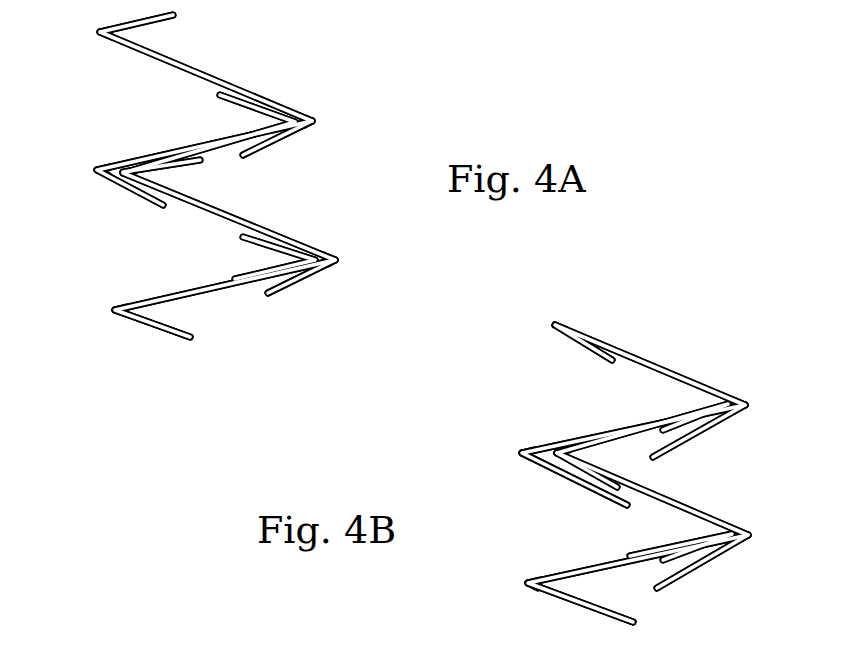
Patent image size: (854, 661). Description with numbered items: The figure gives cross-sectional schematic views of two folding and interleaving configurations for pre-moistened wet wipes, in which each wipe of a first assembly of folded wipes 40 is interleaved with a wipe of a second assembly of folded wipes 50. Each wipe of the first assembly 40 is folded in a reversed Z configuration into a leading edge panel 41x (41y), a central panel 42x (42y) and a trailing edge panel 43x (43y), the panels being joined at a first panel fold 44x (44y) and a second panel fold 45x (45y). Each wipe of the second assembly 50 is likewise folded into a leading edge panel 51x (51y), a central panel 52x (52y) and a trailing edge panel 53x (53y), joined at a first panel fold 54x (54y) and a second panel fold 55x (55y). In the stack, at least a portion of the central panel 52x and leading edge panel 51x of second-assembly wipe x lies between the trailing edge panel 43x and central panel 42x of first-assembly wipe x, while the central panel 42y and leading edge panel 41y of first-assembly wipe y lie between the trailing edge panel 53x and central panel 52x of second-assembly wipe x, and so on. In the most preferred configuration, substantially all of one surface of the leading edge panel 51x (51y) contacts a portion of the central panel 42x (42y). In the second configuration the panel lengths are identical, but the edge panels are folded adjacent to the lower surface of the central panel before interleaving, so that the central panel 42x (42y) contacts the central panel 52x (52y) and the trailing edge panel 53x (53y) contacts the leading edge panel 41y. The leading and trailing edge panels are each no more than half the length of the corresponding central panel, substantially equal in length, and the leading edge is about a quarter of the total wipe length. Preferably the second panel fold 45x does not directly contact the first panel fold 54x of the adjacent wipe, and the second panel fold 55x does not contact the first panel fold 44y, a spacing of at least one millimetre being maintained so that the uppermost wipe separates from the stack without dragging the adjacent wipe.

In FIG. 4A, the first assembly of folded wipes 40 is at (327, 285).
In FIG. 4B, the first assembly of folded wipes 40 is at (755, 548).
In FIG. 4A, the leading edge panel 41x is at (170, 17).
In FIG. 4B, the leading edge panel 41x is at (578, 338).
In FIG. 4A, the central panel 42x is at (257, 92).
In FIG. 4B, the central panel 42x is at (655, 363).
In FIG. 4A, the trailing edge panel 43x is at (290, 137).
In FIG. 4B, the trailing edge panel 43x is at (713, 430).
In FIG. 4A, the first panel fold 44x is at (98, 31).
In FIG. 4B, the first panel fold 44x is at (552, 323).
In FIG. 4A, the second panel fold 45x is at (316, 121).
In FIG. 4B, the second panel fold 45x is at (748, 408).
In FIG. 4A, the second assembly of folded wipes 50 is at (121, 322).
In FIG. 4B, the second assembly of folded wipes 50 is at (537, 605).
In FIG. 4A, the leading edge panel 51x is at (219, 94).
In FIG. 4B, the leading edge panel 51x is at (665, 430).
In FIG. 4A, the central panel 52x is at (142, 158).
In FIG. 4B, the central panel 52x is at (578, 437).
In FIG. 4A, the trailing edge panel 53x is at (133, 197).
In FIG. 4B, the trailing edge panel 53x is at (540, 470).
In FIG. 4A, the first panel fold 54x is at (272, 123).
In FIG. 4B, the first panel fold 54x is at (730, 402).
In FIG. 4A, the second panel fold 55x is at (93, 171).
In FIG. 4B, the second panel fold 55x is at (520, 453).
In FIG. 4A, the leading edge panel 41y is at (198, 161).
In FIG. 4B, the leading edge panel 41y is at (613, 494).
In FIG. 4A, the central panel 42y is at (273, 232).
In FIG. 4B, the central panel 42y is at (700, 507).
In FIG. 4A, the trailing edge panel 43y is at (288, 285).
In FIG. 4B, the trailing edge panel 43y is at (720, 558).
In FIG. 4A, the first panel fold 44y is at (133, 174).
In FIG. 4B, the first panel fold 44y is at (550, 448).
In FIG. 4A, the second panel fold 45y is at (338, 260).
In FIG. 4B, the second panel fold 45y is at (750, 535).
In FIG. 4A, the leading edge panel 51y is at (245, 240).
In FIG. 4B, the leading edge panel 51y is at (660, 556).
In FIG. 4A, the central panel 52y is at (168, 295).
In FIG. 4B, the central panel 52y is at (573, 567).
In FIG. 4A, the trailing edge panel 53y is at (163, 331).
In FIG. 4B, the trailing edge panel 53y is at (590, 610).
In FIG. 4A, the first panel fold 54y is at (308, 262).
In FIG. 4B, the first panel fold 54y is at (727, 532).
In FIG. 4A, the second panel fold 55y is at (113, 310).
In FIG. 4B, the second panel fold 55y is at (527, 583).